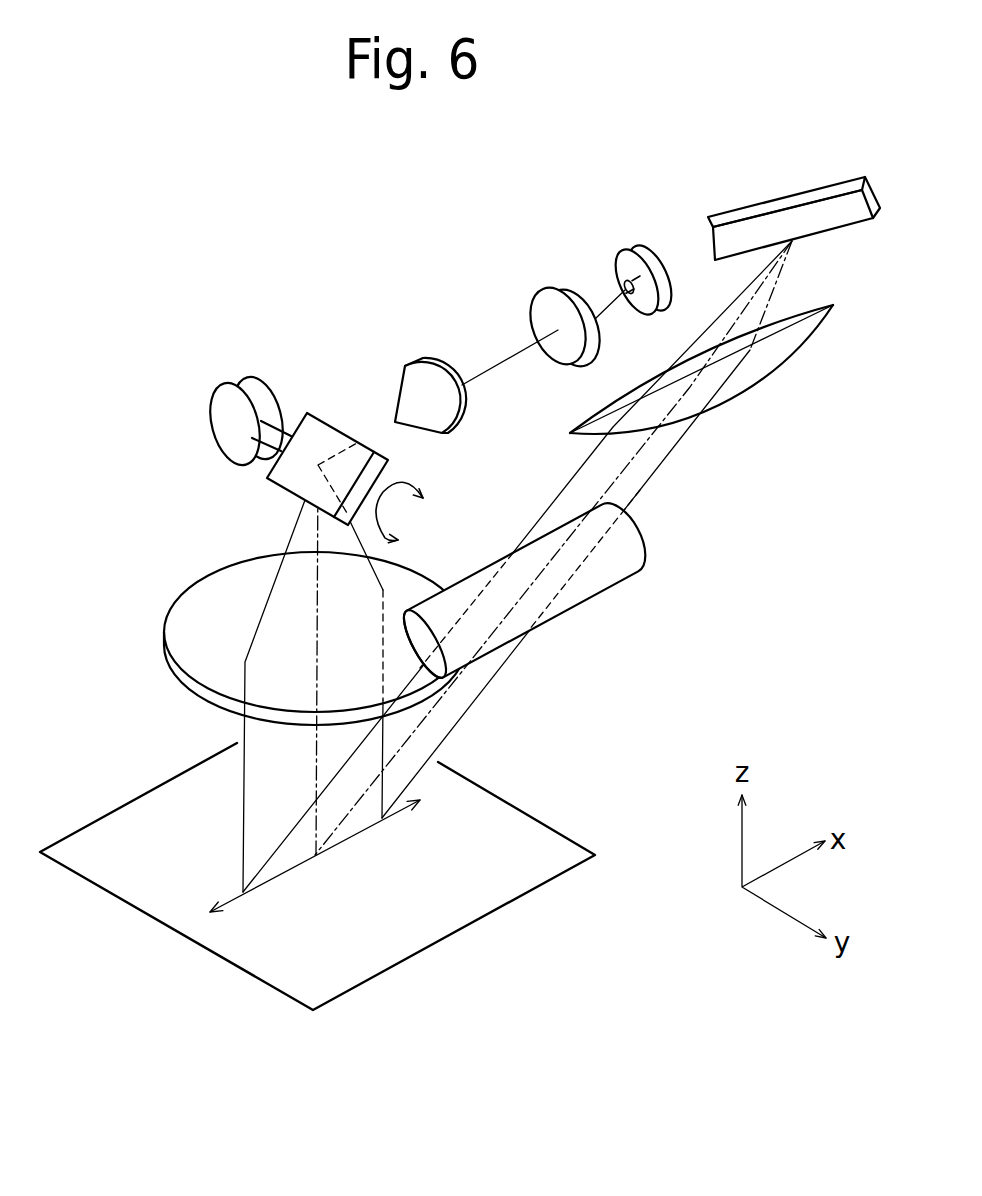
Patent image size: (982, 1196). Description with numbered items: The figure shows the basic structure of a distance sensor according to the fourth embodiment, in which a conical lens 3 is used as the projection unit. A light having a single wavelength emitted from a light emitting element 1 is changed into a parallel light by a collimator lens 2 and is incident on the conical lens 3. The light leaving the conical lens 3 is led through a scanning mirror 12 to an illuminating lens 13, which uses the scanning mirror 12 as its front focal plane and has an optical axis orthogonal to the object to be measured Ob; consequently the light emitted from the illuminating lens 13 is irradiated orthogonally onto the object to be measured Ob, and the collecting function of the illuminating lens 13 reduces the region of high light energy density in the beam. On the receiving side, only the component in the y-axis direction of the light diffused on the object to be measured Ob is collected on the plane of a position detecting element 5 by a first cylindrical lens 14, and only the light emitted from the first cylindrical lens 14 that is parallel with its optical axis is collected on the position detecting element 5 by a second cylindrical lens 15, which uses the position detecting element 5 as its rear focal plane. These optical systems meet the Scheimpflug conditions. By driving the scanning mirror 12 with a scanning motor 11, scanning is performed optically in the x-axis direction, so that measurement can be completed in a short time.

The light emitting element 1 is at (650, 247).
The collimator lens 2 is at (571, 285).
The conical lens 3 is at (443, 357).
The position detecting element 5 is at (781, 200).
The scanning motor 11 is at (234, 387).
The scanning mirror 12 is at (333, 420).
The illuminating lens 13 is at (197, 582).
The first cylindrical lens 14 is at (608, 590).
The second cylindrical lens 15 is at (753, 390).
The object to be measured Ob is at (427, 952).